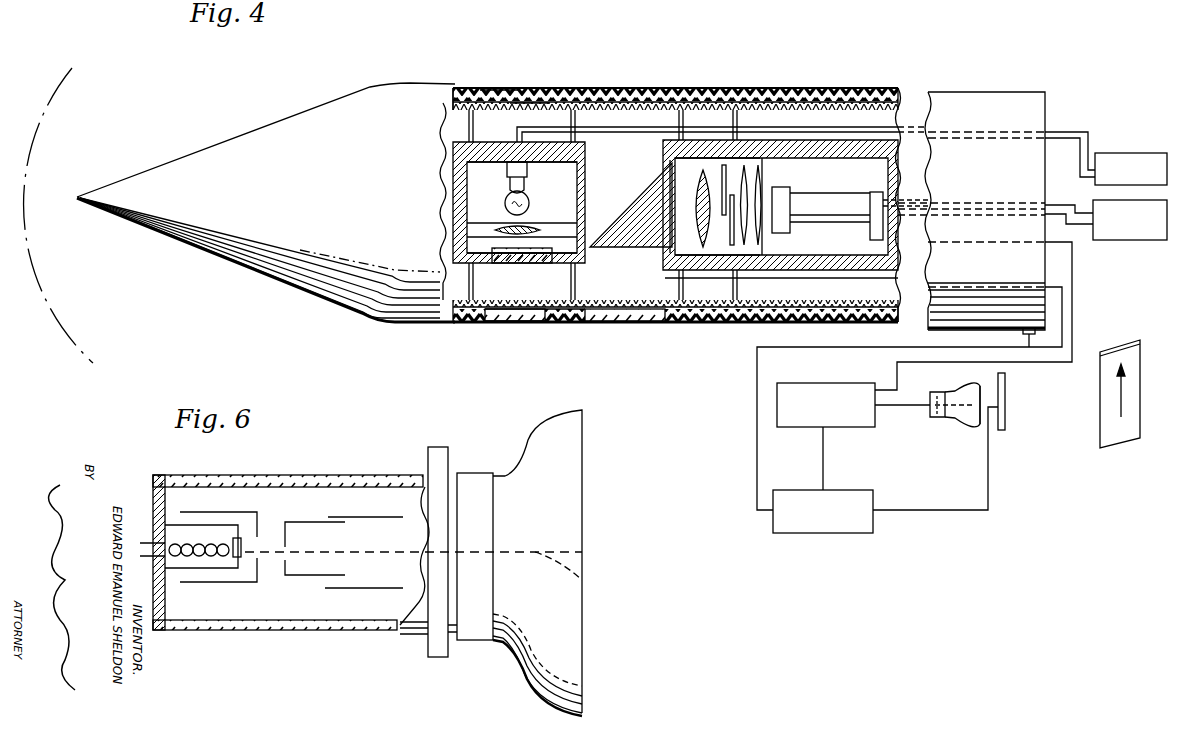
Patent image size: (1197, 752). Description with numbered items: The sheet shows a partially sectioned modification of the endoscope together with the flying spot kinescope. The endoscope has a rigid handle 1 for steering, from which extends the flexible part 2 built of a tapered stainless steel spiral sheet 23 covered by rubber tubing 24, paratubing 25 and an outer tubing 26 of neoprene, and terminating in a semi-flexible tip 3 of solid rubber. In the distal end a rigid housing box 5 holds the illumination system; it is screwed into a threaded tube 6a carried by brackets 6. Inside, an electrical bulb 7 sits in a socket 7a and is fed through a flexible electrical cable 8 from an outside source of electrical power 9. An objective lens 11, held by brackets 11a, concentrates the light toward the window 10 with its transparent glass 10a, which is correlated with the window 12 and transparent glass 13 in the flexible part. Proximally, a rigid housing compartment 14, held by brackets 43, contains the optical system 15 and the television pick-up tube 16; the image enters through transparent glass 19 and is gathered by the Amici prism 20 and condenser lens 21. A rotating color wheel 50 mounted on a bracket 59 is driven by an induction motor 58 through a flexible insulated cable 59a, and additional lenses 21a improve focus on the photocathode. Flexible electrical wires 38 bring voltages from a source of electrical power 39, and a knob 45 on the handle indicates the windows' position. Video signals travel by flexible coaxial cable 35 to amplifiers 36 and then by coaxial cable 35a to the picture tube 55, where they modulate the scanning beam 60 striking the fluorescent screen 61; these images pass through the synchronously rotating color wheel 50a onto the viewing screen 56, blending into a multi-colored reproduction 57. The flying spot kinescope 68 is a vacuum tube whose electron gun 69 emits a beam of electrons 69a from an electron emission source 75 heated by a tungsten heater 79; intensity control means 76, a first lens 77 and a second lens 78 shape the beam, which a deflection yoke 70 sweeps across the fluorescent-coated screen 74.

In FIG. 4, the handle 1 is at (981, 92).
In FIG. 4, the flexible part 2 is at (725, 88).
In FIG. 4, the semi-flexible tip 3 is at (245, 258).
In FIG. 4, the housing box 5 is at (588, 176).
In FIG. 4, the brackets 6 is at (466, 127).
In FIG. 4, the threaded tube 6a is at (498, 140).
In FIG. 4, the electrical bulb 7 is at (505, 201).
In FIG. 4, the socket 7a is at (527, 170).
In FIG. 4, the flexible electrical cable 8 is at (636, 125).
In FIG. 4, the source of electrical power 9 is at (1127, 153).
In FIG. 4, the window 10 is at (511, 264).
In FIG. 4, the transparent glass 10a is at (519, 265).
In FIG. 4, the objective lens 11 is at (505, 228).
In FIG. 4, the brackets 11a is at (555, 223).
In FIG. 4, the window 12 is at (523, 321).
In FIG. 4, the transparent glass 13 is at (532, 318).
In FIG. 4, the housing compartment 14 is at (876, 128).
In FIG. 4, the optical system 15 is at (697, 230).
In FIG. 4, the television pick-up tube 16 is at (850, 192).
In FIG. 4, the transparent glass 19 is at (658, 320).
In FIG. 4, the Amici prism 20 is at (640, 248).
In FIG. 4, the condenser lens 21 is at (666, 262).
In FIG. 4, the additional lenses 21a is at (762, 187).
In FIG. 4, the stainless steel spiral sheet 23 is at (560, 325).
In FIG. 4, the rubber tubing 24 is at (460, 98).
In FIG. 4, the paratubing 25 is at (497, 95).
In FIG. 4, the outer tubing 26 is at (524, 96).
In FIG. 4, the flexible coaxial cable 35 is at (966, 246).
In FIG. 4, the coaxial cable 35a is at (913, 407).
In FIG. 4, the amplifiers 36 is at (848, 385).
In FIG. 4, the flexible electrical wires 38 is at (1052, 207).
In FIG. 4, the source of electrical power 39 is at (1157, 240).
In FIG. 4, the brackets 43 is at (686, 118).
In FIG. 4, the knob 45 is at (1023, 331).
In FIG. 4, the rotating color wheel 50 is at (738, 174).
In FIG. 4, the color wheel 50a is at (1003, 430).
In FIG. 4, the picture tube 55 is at (977, 390).
In FIG. 4, the viewing screen 56 is at (1100, 413).
In FIG. 4, the multi-colored reproduction 57 is at (1123, 384).
In FIG. 4, the induction motor 58 is at (842, 490).
In FIG. 4, the bracket 59 is at (705, 188).
In FIG. 4, the flexible insulated cable 59a is at (972, 285).
In FIG. 4, the scanning beam 60 is at (958, 413).
In FIG. 4, the fluorescent screen 61 is at (975, 422).
In FIG. 6, the flying spot kinescope 68 is at (322, 475).
In FIG. 6, the electron gun 69 is at (196, 525).
In FIG. 6, the beam of electrons 69a is at (582, 580).
In FIG. 6, the deflection yoke 70 is at (448, 453).
In FIG. 6, the screen 74 is at (583, 500).
In FIG. 6, the electron emission source 75 is at (245, 546).
In FIG. 6, the intensity control means 76 is at (258, 517).
In FIG. 6, the first lens 77 is at (336, 522).
In FIG. 6, the second lens 78 is at (360, 588).
In FIG. 6, the tungsten heater 79 is at (207, 557).